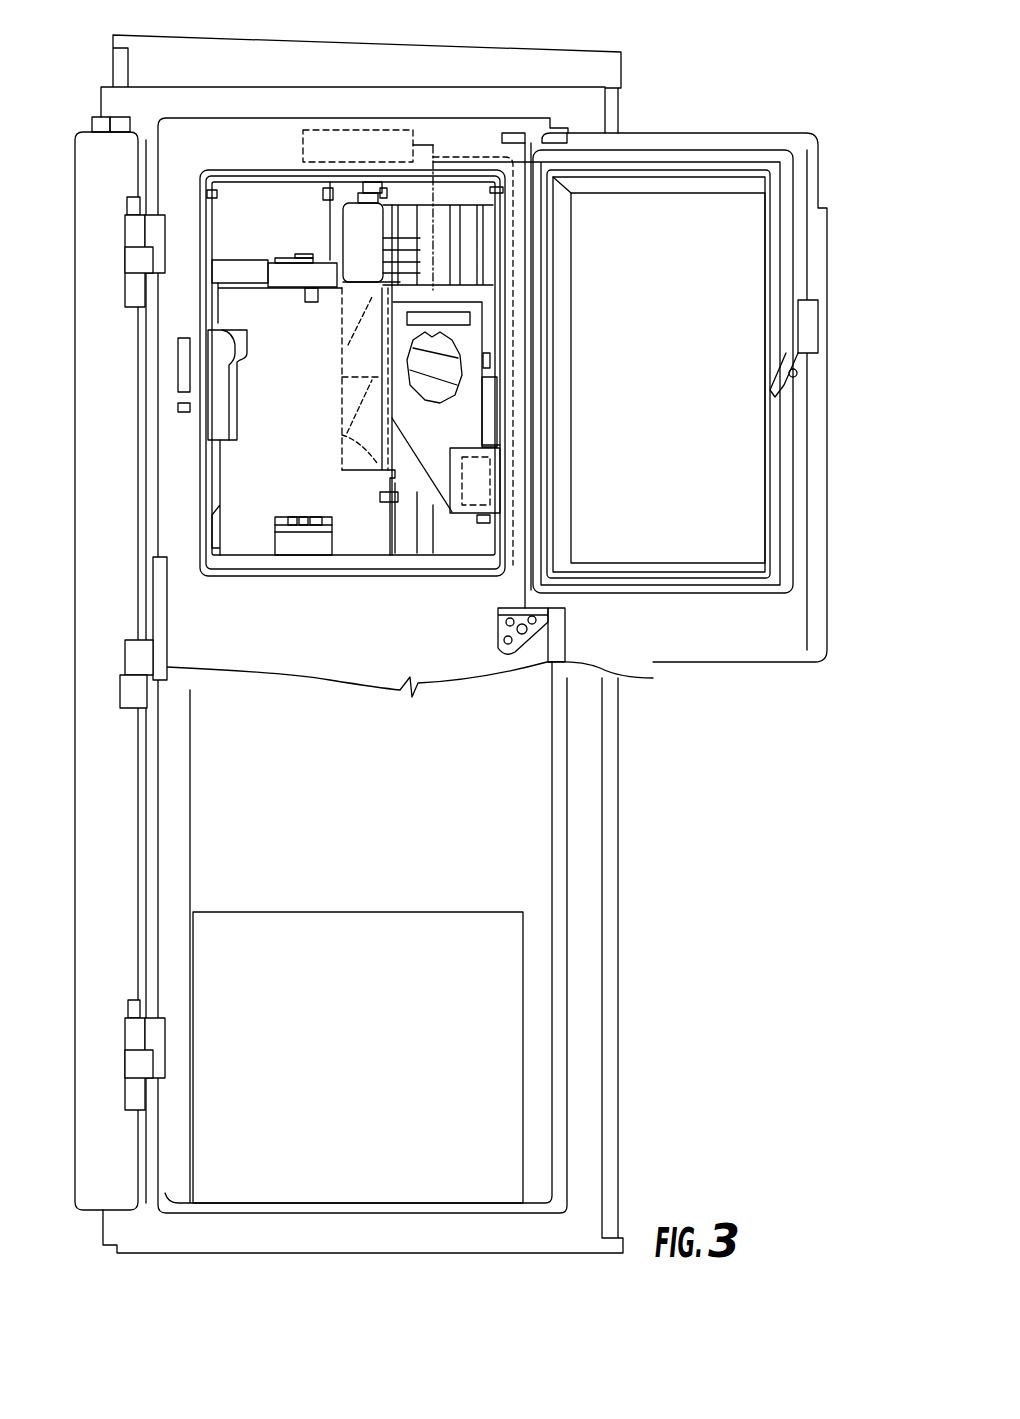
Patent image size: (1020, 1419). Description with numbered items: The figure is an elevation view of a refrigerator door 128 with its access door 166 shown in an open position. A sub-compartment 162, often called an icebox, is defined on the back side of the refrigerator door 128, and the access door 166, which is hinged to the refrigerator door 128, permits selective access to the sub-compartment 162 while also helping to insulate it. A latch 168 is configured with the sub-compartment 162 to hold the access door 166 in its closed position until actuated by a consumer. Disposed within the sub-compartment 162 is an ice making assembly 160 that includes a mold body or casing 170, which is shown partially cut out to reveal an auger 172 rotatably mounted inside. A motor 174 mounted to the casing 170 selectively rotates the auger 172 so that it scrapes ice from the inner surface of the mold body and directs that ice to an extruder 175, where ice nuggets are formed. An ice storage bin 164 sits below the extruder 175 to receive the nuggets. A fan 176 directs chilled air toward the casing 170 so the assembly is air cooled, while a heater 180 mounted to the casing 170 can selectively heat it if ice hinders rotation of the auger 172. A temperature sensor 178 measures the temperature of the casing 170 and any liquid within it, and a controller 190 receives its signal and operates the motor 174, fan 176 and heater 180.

The refrigerator door 128 is at (497, 803).
The ice making assembly 160 is at (337, 231).
The sub-compartment 162 is at (212, 460).
The ice storage bin 164 is at (353, 508).
The access door 166 is at (673, 142).
The latch 168 is at (817, 337).
The casing 170 is at (442, 433).
The auger 172 is at (447, 388).
The motor 174 is at (463, 306).
The extruder 175 is at (403, 290).
The fan 176 is at (475, 482).
The temperature sensor 178 is at (490, 357).
The heater 180 is at (470, 318).
The controller 190 is at (353, 130).